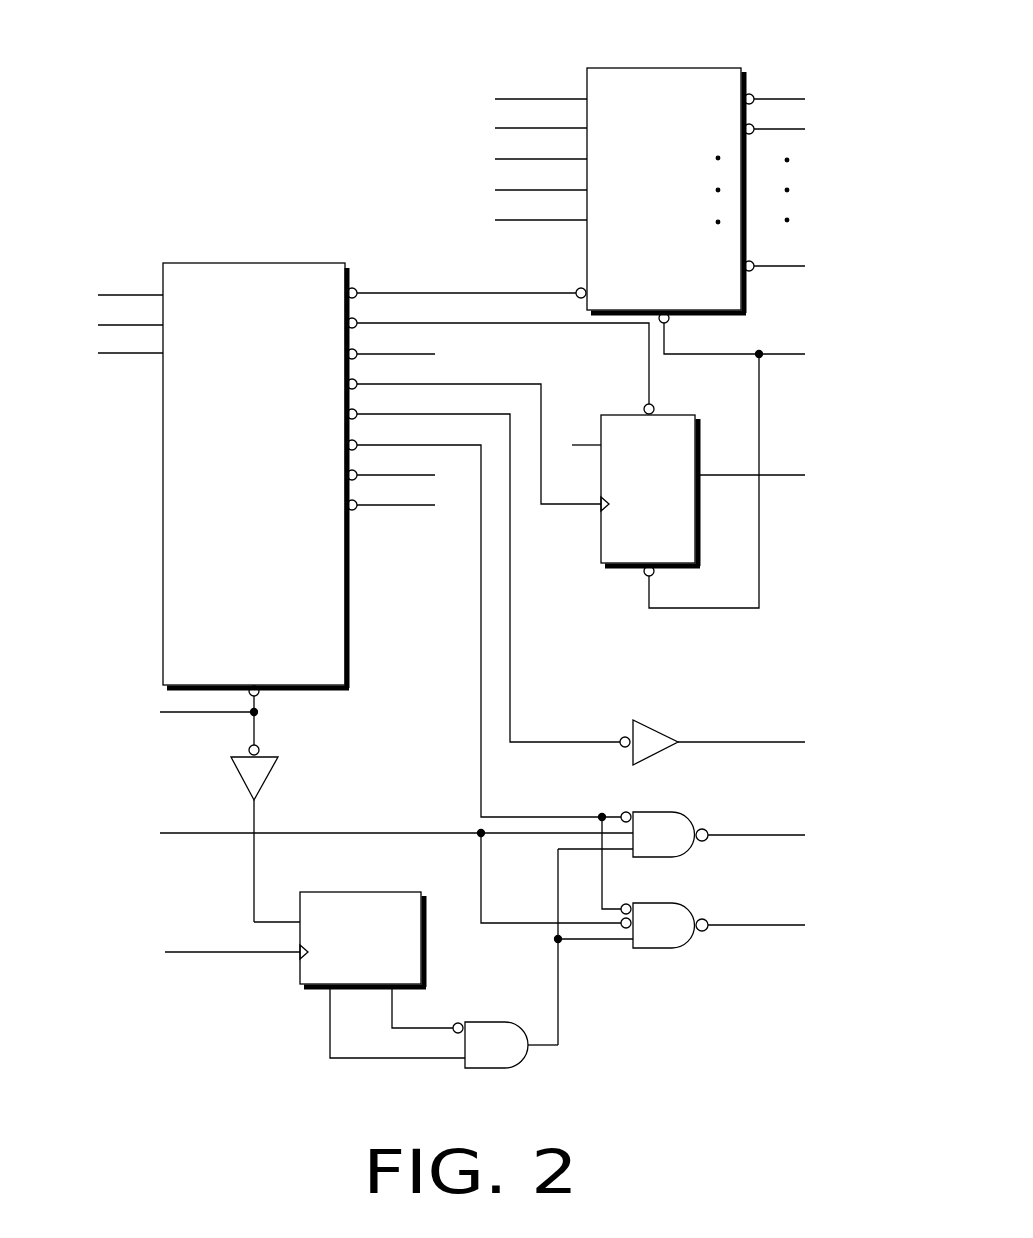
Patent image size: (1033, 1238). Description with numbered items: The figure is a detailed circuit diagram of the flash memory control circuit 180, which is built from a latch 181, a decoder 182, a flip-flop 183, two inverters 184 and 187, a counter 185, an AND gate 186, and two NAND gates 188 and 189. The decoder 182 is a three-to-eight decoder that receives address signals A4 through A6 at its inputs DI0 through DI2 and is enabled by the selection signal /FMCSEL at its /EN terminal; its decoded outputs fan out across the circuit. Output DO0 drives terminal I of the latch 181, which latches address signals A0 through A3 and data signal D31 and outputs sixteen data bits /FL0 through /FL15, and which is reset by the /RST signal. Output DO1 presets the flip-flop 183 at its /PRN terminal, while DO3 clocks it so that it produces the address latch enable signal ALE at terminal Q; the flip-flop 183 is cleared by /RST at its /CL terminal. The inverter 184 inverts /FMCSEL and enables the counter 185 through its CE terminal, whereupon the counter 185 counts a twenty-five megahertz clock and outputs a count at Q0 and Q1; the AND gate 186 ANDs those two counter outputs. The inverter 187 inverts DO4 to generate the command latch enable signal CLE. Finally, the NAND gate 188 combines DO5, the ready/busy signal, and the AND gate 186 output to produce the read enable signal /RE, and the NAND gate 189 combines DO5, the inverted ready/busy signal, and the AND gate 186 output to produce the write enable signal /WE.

The flash memory control circuit 180 is at (296, 138).
The latch 181 is at (663, 68).
The decoder 182 is at (253, 263).
The flip-flop 183 is at (676, 410).
The inverter 184 is at (265, 780).
The counter 185 is at (358, 892).
The AND gate 186 is at (498, 1022).
The inverter 187 is at (684, 710).
The NAND gate 188 is at (694, 793).
The NAND gate 189 is at (694, 885).